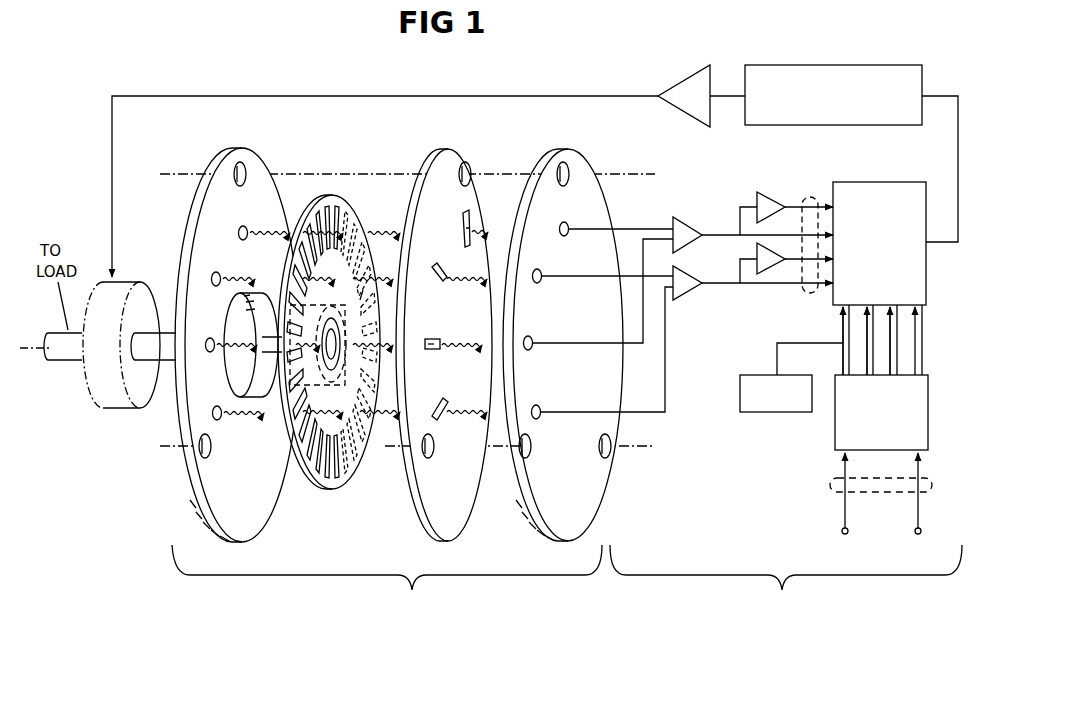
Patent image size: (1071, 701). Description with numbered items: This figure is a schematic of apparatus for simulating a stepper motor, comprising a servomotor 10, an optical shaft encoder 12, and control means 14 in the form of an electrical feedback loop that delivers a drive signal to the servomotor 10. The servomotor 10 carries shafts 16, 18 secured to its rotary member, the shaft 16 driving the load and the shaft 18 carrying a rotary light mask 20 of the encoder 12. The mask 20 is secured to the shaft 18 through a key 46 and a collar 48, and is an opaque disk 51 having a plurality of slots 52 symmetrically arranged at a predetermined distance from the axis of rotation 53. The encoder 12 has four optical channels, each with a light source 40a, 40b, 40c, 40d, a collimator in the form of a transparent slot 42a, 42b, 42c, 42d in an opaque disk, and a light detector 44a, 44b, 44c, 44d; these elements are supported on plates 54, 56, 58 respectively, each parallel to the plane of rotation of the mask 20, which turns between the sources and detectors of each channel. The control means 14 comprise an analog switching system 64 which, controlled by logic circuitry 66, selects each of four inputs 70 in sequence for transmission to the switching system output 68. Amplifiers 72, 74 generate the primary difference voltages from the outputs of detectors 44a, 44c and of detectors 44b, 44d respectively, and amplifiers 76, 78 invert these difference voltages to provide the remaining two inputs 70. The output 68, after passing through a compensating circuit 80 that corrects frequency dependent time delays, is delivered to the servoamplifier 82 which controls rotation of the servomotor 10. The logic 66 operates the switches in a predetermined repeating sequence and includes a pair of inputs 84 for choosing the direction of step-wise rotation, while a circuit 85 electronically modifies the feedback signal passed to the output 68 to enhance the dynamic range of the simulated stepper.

The servomotor 10 is at (107, 412).
The optical shaft encoder 12 is at (387, 582).
The control means 14 is at (786, 582).
The shaft 16 is at (66, 362).
The shaft 18 is at (148, 355).
The rotary light mask 20 is at (339, 355).
The light source 40a is at (245, 228).
The light source 40b is at (215, 273).
The light source 40c is at (209, 339).
The light source 40d is at (216, 407).
The collimator slot 42a is at (469, 212).
The collimator slot 42b is at (440, 267).
The collimator slot 42c is at (430, 339).
The collimator slot 42d is at (436, 414).
The light detector 44a is at (567, 222).
The light detector 44b is at (537, 269).
The light detector 44c is at (527, 336).
The light detector 44d is at (535, 405).
The key 46 is at (343, 325).
The collar 48 is at (270, 323).
The opaque disk 51 is at (326, 262).
The slots 52 is at (326, 226).
The axis of rotation 53 is at (44, 346).
The plate 54 is at (243, 150).
The plate 56 is at (472, 150).
The plate 58 is at (568, 150).
The analog switching system 64 is at (927, 272).
The logic circuitry 66 is at (928, 419).
The switching system output 68 is at (958, 173).
The inputs 70 is at (810, 294).
The amplifier 72 is at (684, 221).
The amplifier 74 is at (687, 296).
The amplifier 76 is at (768, 198).
The amplifier 78 is at (765, 275).
The compensating circuit 80 is at (825, 64).
The servoamplifier 82 is at (683, 82).
The inputs 84 is at (830, 486).
The circuit 85 is at (783, 413).